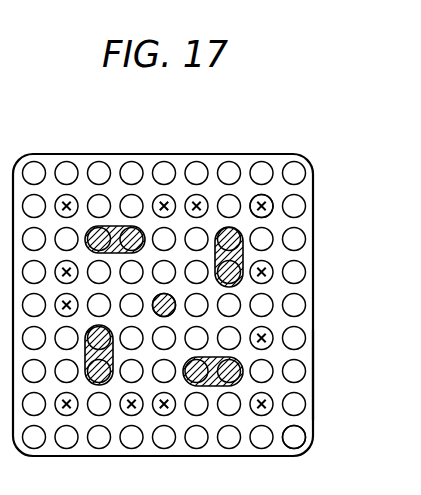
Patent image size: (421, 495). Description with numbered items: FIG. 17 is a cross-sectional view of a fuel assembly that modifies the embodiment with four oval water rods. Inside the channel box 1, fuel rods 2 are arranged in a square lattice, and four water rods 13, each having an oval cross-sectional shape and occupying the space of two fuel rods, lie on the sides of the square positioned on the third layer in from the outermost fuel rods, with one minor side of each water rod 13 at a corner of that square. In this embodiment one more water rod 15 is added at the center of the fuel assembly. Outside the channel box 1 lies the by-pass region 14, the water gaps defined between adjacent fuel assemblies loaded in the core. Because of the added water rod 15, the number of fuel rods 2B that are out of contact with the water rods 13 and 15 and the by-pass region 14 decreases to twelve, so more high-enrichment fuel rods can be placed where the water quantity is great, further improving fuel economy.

The channel box 1 is at (267, 153).
The fuel rod 2 is at (298, 431).
The fuel rod not in contact with water rods or by-pass region 2B is at (268, 200).
The water rod 13 is at (241, 259).
The by-pass region 14 is at (314, 374).
The water rod 15 is at (172, 313).